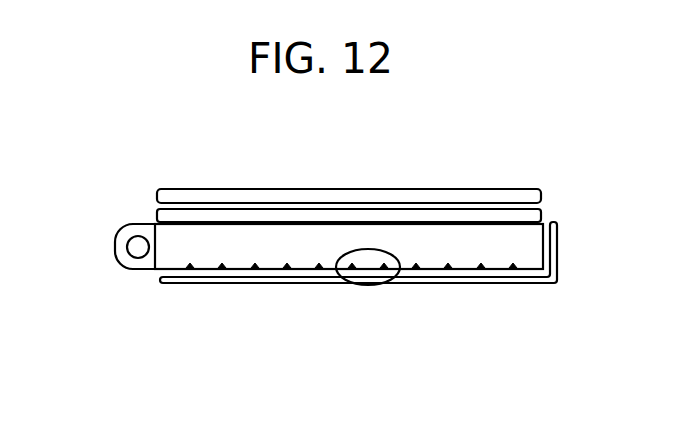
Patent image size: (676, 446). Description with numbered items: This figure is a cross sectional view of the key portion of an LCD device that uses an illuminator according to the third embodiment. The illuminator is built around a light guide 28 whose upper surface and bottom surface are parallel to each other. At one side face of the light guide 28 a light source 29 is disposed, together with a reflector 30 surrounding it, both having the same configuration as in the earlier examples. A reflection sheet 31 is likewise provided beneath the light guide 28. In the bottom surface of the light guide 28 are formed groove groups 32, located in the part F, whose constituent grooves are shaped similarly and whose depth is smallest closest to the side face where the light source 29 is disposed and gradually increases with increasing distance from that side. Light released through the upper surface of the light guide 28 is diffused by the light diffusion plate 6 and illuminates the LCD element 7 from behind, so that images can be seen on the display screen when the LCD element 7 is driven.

The LCD element 7 is at (322, 192).
The light diffusion plate 6 is at (452, 216).
The light guide 28 is at (177, 253).
The reflector 30 is at (128, 223).
The light source 29 is at (125, 260).
The groove groups 32 is at (253, 268).
The reflection sheet 31 is at (492, 280).
The part F is at (367, 285).